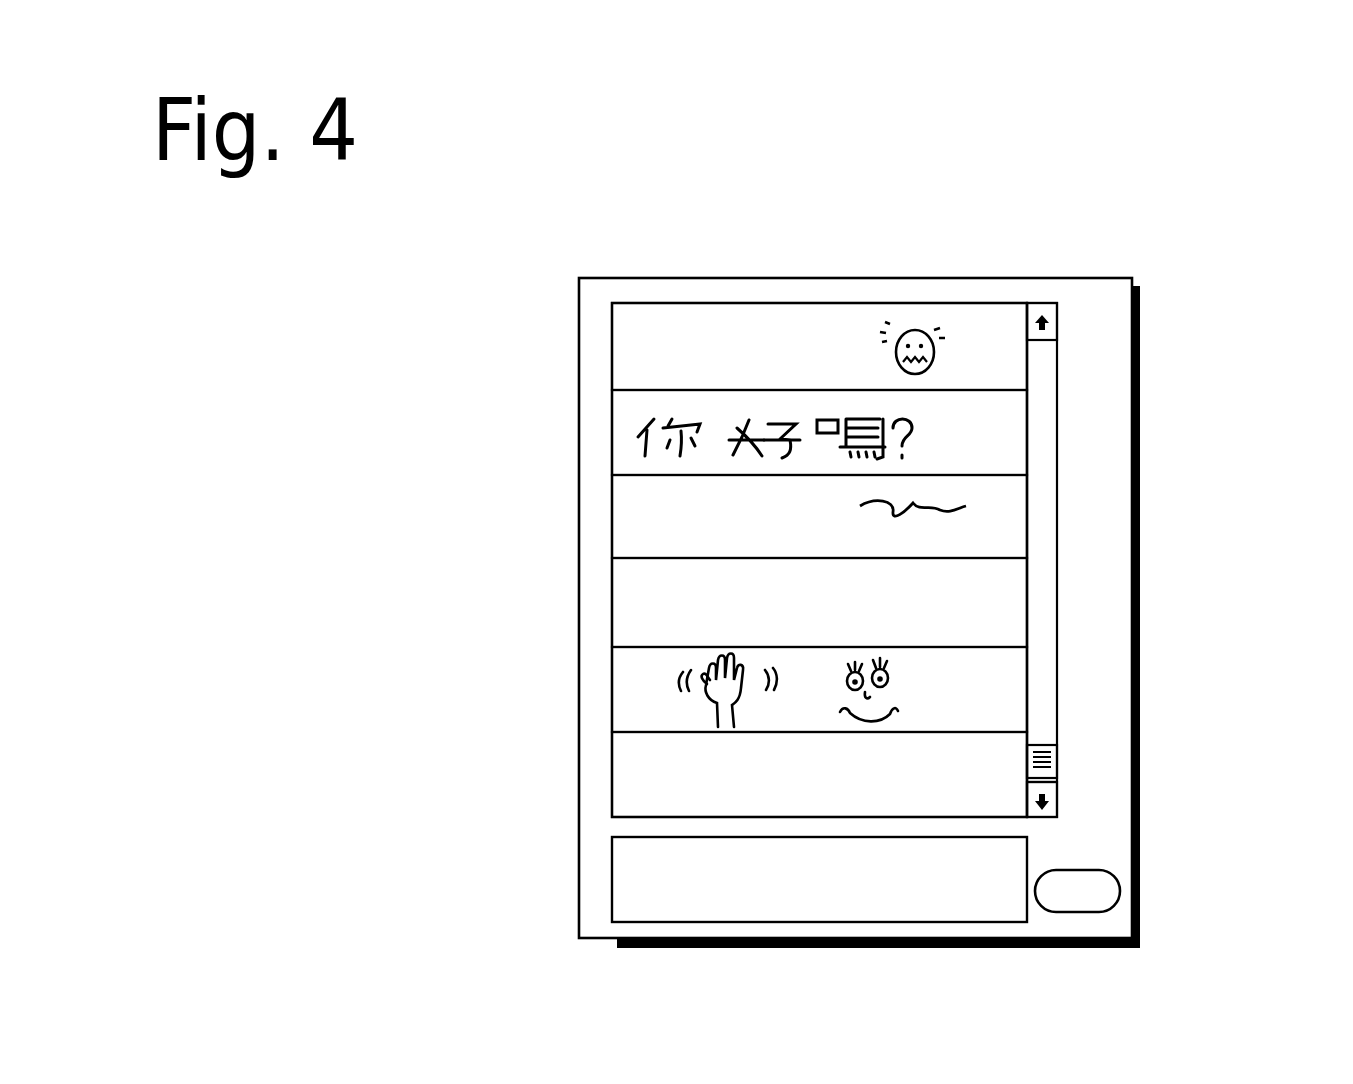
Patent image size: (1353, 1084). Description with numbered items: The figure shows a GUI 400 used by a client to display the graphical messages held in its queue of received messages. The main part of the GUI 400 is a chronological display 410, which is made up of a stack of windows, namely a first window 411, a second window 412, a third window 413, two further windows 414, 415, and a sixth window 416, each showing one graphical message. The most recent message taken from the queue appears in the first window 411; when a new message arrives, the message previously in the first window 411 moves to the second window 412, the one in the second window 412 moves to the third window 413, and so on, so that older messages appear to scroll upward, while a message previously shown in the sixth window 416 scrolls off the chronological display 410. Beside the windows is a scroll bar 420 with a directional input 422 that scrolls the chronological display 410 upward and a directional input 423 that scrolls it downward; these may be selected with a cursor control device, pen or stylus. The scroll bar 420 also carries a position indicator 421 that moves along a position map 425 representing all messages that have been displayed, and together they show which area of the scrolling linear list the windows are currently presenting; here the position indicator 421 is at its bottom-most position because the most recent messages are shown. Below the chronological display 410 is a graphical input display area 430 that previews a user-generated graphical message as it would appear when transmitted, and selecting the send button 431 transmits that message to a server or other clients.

The GUI 400 is at (1232, 304).
The chronological display 410 is at (596, 653).
The first window 411 is at (820, 774).
The second window 412 is at (820, 689).
The third window 413 is at (820, 602).
The window 414 is at (820, 517).
The window 415 is at (820, 432).
The sixth window 416 is at (820, 346).
The scroll bar 420 is at (1085, 515).
The position indicator 421 is at (1050, 748).
The directional input 422 is at (1057, 320).
The directional input 423 is at (1057, 814).
The position map 425 is at (1048, 566).
The graphical input display area 430 is at (596, 881).
The send button 431 is at (1120, 888).